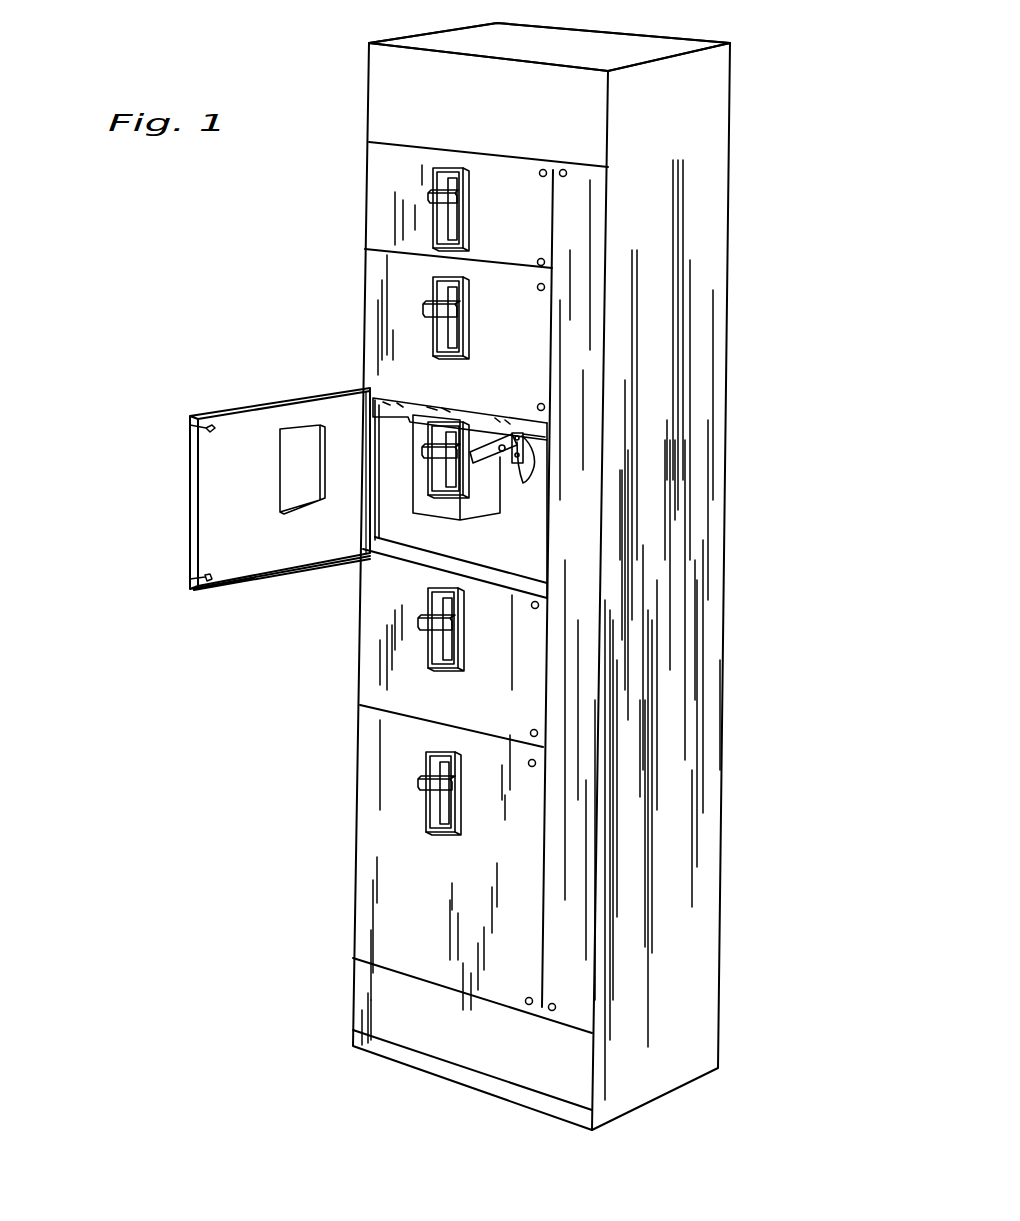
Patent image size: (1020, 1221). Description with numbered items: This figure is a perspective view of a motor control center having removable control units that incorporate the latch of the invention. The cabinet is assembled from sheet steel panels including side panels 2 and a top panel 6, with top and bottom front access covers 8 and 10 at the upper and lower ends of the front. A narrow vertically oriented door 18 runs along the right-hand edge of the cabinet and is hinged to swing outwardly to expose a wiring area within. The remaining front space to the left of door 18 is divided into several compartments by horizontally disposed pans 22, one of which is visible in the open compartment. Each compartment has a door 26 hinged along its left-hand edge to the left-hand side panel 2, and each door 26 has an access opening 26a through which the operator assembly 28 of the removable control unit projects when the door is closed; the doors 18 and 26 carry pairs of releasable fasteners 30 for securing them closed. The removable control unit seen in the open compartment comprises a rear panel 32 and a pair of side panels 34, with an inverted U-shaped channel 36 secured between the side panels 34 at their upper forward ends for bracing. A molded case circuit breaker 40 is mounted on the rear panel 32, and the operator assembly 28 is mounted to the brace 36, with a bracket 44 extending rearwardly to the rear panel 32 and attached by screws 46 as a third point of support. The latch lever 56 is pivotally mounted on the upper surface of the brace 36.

The side panels 2 is at (722, 158).
The top panel 6 is at (675, 45).
The top front access cover 8 is at (383, 122).
The bottom front access cover 10 is at (378, 985).
The door 18 is at (578, 320).
The pan 22 is at (532, 565).
The door 26 is at (372, 268).
The access opening 26a is at (470, 220).
The operator assembly 28 is at (425, 230).
The releasable fasteners 30 is at (562, 168).
The rear panel 32 is at (537, 468).
The side panels 34 is at (403, 518).
The inverted U-shaped channel 36 is at (540, 437).
The molded case circuit breaker 40 is at (448, 507).
The bracket 44 is at (492, 440).
The screws 46 is at (520, 466).
The lever 56 is at (457, 413).